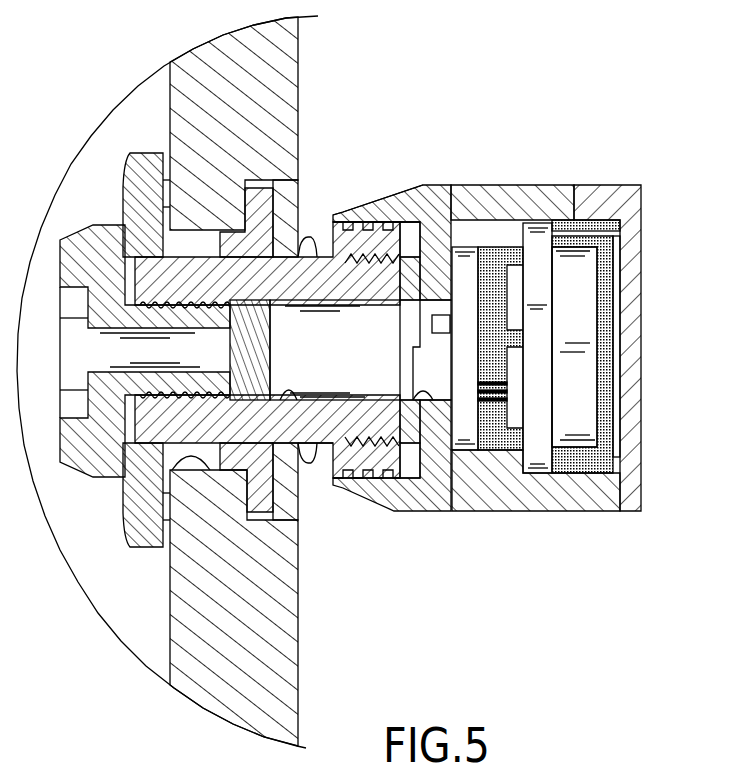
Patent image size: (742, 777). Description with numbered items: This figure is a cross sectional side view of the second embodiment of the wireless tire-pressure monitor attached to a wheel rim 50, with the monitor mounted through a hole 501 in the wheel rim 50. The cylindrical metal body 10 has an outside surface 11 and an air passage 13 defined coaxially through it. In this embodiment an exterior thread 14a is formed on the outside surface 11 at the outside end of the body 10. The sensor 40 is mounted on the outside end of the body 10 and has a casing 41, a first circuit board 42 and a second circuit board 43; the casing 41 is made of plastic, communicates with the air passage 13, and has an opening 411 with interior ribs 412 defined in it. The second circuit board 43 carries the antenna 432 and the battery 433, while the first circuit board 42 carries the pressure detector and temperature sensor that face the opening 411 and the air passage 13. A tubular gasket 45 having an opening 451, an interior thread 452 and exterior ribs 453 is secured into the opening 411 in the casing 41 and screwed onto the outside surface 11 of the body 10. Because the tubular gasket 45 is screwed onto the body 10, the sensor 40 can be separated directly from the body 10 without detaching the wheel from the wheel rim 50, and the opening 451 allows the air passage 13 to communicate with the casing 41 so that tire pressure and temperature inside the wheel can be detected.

The body 10 is at (317, 237).
The outside surface 11 is at (315, 447).
The air passage 13 is at (283, 400).
The exterior thread 14a is at (343, 263).
The sensor 40 is at (589, 313).
The casing 41 is at (592, 195).
The opening 411 is at (340, 220).
The interior ribs 412 is at (398, 232).
The first circuit board 42 is at (466, 447).
The second circuit board 43 is at (536, 468).
The antenna 432 is at (617, 273).
The battery 433 is at (578, 362).
The tubular gasket 45 is at (418, 470).
The opening 451 is at (409, 445).
The interior thread 452 is at (378, 270).
The exterior ribs 453 is at (368, 218).
The wheel rim 50 is at (295, 38).
The hole 501 is at (197, 458).